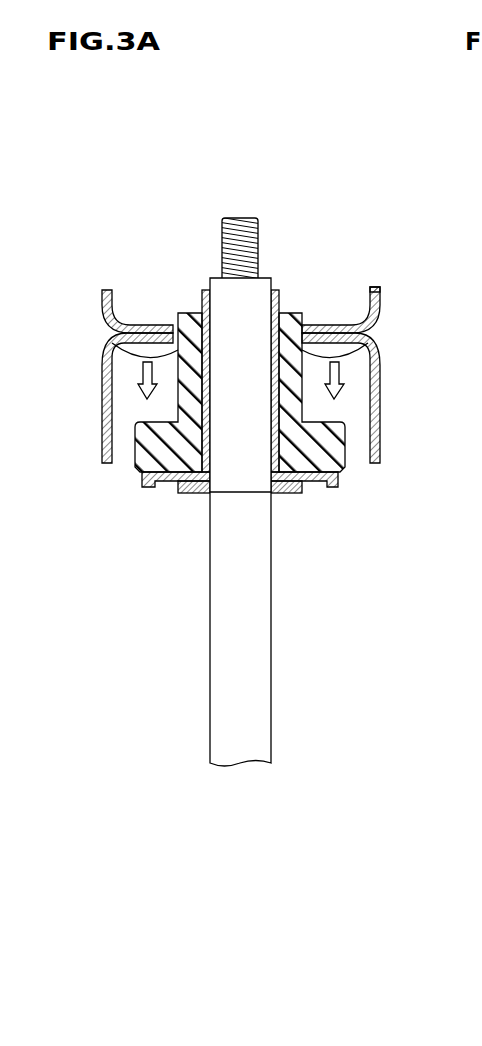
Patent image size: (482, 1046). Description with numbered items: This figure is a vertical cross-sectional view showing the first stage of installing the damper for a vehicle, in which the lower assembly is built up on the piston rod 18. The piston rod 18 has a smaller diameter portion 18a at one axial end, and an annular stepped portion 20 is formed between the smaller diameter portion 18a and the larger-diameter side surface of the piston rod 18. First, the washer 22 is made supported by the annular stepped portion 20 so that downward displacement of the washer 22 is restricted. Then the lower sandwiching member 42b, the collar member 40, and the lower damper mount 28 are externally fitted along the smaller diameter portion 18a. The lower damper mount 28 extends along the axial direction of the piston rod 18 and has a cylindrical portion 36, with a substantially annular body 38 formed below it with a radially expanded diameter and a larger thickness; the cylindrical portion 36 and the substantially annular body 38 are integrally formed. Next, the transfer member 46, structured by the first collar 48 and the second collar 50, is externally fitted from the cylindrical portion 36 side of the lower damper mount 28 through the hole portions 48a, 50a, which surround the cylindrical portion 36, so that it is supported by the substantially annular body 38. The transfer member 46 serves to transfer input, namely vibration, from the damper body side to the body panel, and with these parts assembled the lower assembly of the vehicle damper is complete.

The piston rod 18 is at (203, 586).
The smaller diameter portion 18a is at (180, 404).
The annular stepped portion 20 is at (269, 494).
The washer 22 is at (307, 489).
The lower damper mount 28 is at (386, 368).
The cylindrical portion 36 is at (382, 289).
The substantially annular body 38 is at (135, 442).
The collar member 40 is at (302, 322).
The lower sandwiching member 42b is at (343, 481).
The transfer member 46 is at (386, 368).
The first collar 48 is at (372, 306).
The hole portion 48a is at (192, 312).
The second collar 50 is at (359, 398).
The hole portion 50a is at (105, 342).